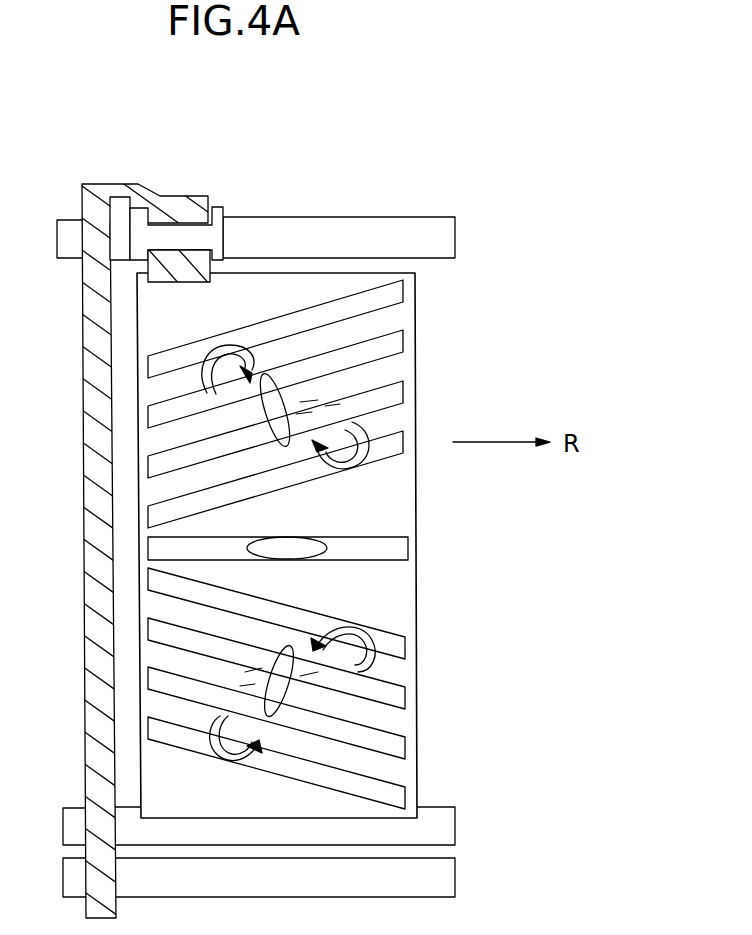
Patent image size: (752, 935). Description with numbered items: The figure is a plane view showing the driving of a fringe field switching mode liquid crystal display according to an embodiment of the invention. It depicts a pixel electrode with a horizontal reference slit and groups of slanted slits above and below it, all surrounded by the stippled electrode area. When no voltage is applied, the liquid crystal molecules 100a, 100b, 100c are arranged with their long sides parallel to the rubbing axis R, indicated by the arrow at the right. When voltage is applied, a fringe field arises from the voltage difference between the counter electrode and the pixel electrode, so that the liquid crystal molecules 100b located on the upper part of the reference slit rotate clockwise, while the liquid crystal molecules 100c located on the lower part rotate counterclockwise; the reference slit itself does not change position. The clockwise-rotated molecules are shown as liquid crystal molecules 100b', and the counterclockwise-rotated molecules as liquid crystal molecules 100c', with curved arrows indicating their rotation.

The liquid crystal molecule 100a is at (327, 550).
The liquid crystal molecules 100b is at (342, 404).
The liquid crystal molecules rotated clockwise 100b' is at (394, 386).
The liquid crystal molecules 100c is at (340, 688).
The liquid crystal molecules rotated counterclockwise 100c' is at (399, 703).